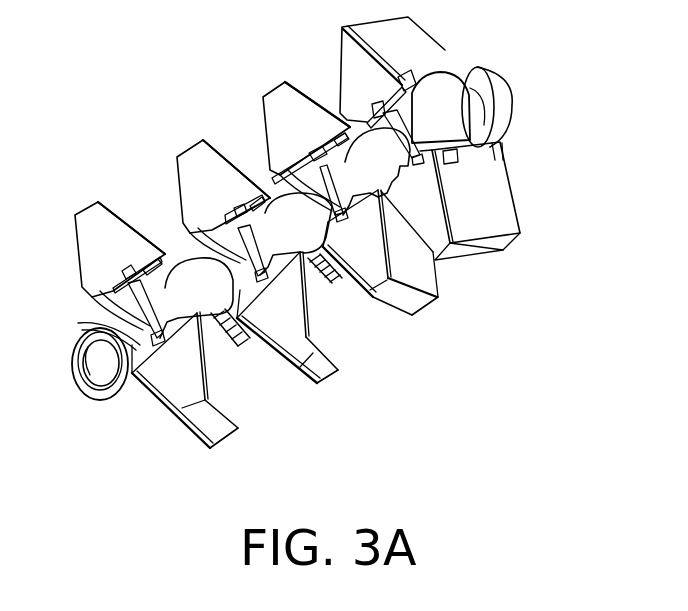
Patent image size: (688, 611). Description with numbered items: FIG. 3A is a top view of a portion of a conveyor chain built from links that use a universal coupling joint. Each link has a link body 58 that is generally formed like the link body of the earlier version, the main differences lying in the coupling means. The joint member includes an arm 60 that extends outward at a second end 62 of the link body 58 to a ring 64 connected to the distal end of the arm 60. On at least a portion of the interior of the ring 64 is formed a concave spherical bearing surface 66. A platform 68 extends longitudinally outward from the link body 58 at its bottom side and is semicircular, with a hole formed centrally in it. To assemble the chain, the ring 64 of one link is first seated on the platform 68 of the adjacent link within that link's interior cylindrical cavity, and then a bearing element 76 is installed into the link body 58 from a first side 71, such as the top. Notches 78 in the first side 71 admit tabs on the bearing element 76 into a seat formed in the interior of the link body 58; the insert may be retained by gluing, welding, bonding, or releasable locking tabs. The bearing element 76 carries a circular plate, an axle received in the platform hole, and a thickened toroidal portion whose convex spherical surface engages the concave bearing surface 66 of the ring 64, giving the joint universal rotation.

The link body 58 is at (512, 215).
The arm 60 is at (92, 324).
The second end 62 is at (133, 378).
The ring 64 is at (90, 392).
The concave spherical bearing surface 66 is at (80, 343).
The platform 68 is at (487, 65).
The first side 71 is at (342, 78).
The bearing element 76 is at (440, 97).
The notches 78 is at (128, 278).